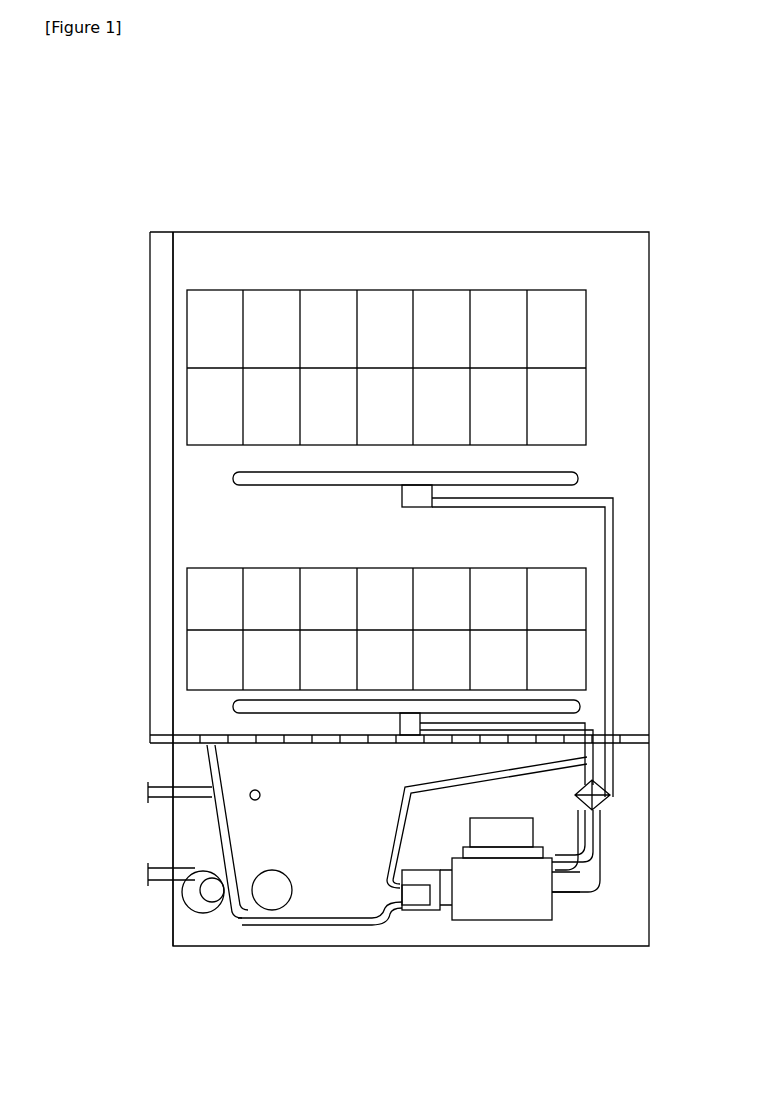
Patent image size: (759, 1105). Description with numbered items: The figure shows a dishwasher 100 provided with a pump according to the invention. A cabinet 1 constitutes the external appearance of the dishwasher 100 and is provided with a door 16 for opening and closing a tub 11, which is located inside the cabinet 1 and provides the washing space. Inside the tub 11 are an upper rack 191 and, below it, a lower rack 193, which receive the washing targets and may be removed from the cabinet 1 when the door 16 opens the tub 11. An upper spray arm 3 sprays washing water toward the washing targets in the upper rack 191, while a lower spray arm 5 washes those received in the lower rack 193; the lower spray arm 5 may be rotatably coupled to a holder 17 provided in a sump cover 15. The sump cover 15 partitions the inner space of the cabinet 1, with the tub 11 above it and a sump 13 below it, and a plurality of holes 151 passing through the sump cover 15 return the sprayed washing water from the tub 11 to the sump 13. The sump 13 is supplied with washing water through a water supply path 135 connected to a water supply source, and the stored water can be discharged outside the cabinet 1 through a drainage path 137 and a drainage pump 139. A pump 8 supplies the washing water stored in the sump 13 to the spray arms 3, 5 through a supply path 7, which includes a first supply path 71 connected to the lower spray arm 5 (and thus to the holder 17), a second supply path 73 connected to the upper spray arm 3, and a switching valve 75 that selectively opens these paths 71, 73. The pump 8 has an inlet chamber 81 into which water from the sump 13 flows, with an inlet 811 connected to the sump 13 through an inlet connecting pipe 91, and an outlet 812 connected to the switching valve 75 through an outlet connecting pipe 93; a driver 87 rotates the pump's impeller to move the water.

The dishwasher 100 is at (661, 123).
The cabinet 1 is at (649, 288).
The tub 11 is at (545, 262).
The door 16 is at (162, 463).
The upper rack 191 is at (185, 290).
The lower rack 193 is at (213, 568).
The upper spray arm 3 is at (578, 475).
The lower spray arm 5 is at (580, 706).
The holder 17 is at (400, 722).
The sump cover 15 is at (160, 728).
The holes 151 is at (210, 772).
The water supply path 135 is at (165, 803).
The sump 13 is at (307, 946).
The drainage path 137 is at (230, 946).
The drainage pump 139 is at (190, 946).
The inlet connecting pipe 91 is at (412, 946).
The inlet 811 is at (450, 946).
The inlet chamber 81 is at (505, 946).
The outlet 812 is at (572, 946).
The pump 8 is at (575, 1023).
The driver 87 is at (505, 835).
The outlet connecting pipe 93 is at (600, 893).
The supply path 7 is at (722, 712).
The first supply path 71 is at (620, 745).
The second supply path 73 is at (600, 722).
The switching valve 75 is at (612, 785).